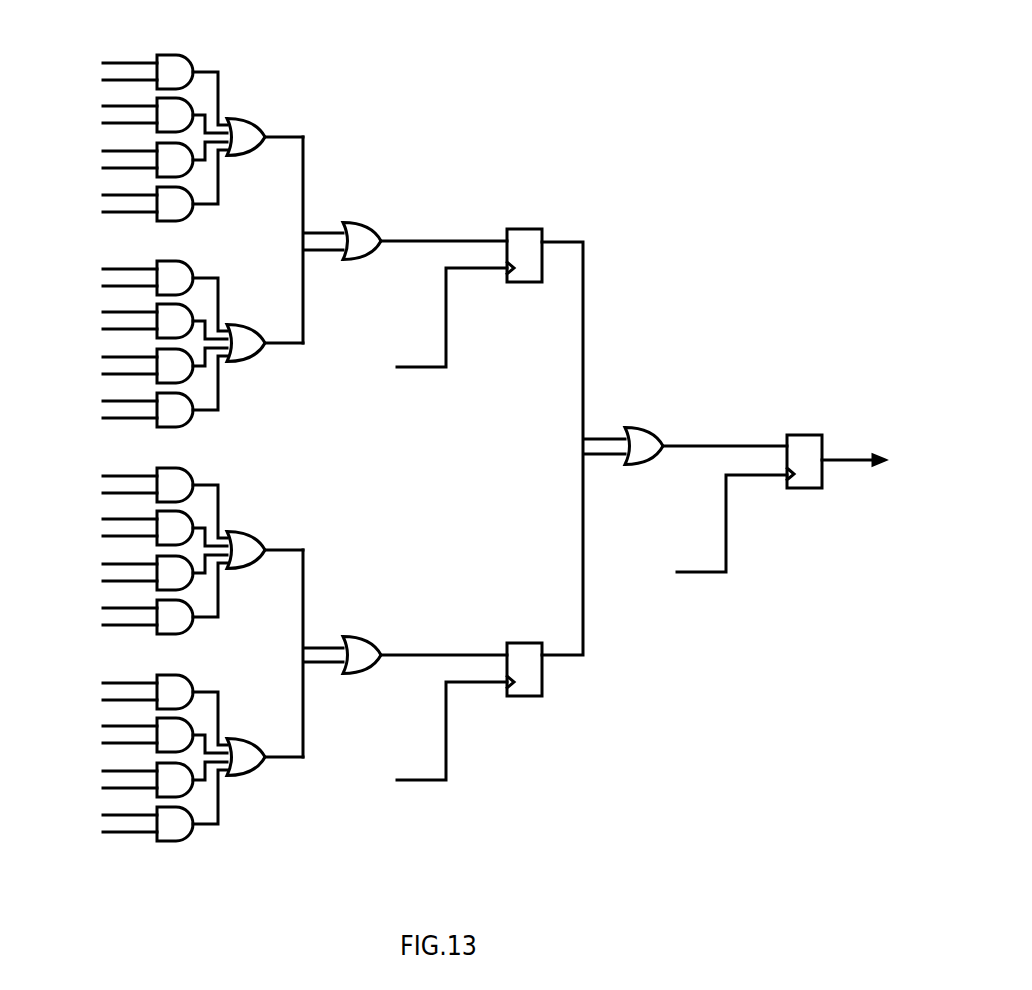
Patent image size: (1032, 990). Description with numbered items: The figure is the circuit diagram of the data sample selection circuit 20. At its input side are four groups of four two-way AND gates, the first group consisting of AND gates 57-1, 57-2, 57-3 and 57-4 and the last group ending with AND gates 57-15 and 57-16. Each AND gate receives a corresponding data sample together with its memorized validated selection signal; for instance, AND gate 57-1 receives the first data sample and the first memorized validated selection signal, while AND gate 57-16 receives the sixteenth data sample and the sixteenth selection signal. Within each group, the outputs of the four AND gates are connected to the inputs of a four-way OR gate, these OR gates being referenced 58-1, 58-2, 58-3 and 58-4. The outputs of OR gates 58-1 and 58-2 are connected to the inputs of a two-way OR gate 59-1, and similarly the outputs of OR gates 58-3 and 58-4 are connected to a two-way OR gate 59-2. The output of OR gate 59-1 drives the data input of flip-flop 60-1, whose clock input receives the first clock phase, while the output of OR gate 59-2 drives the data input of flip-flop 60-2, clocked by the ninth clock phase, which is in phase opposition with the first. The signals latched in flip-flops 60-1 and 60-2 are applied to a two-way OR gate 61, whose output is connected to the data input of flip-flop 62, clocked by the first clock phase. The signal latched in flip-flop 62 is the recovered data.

The data sample selection circuit 20 is at (863, 57).
The two-way AND gate 57-1 is at (182, 55).
The two-way AND gate 57-2 is at (193, 105).
The two-way AND gate 57-3 is at (193, 172).
The two-way AND gate 57-4 is at (183, 218).
The two-way AND gate 57-15 is at (187, 788).
The two-way AND gate 57-16 is at (187, 840).
The four-way OR gate 58-1 is at (253, 122).
The four-way OR gate 58-2 is at (255, 355).
The four-way OR gate 58-3 is at (252, 537).
The four-way OR gate 58-4 is at (255, 766).
The two-way OR gate 59-1 is at (375, 223).
The two-way OR gate 59-2 is at (375, 637).
The flip-flop 60-1 is at (528, 229).
The flip-flop 60-2 is at (528, 643).
The two-way OR gate 61 is at (650, 430).
The flip-flop 62 is at (807, 433).